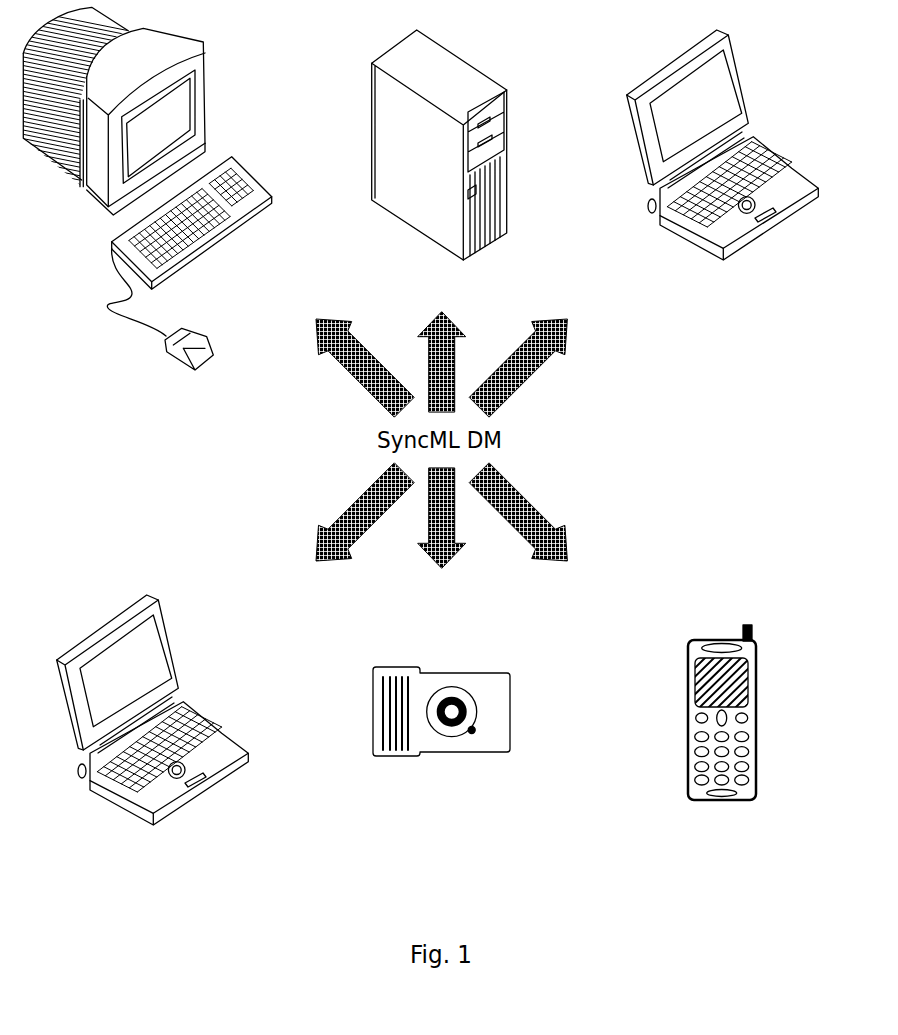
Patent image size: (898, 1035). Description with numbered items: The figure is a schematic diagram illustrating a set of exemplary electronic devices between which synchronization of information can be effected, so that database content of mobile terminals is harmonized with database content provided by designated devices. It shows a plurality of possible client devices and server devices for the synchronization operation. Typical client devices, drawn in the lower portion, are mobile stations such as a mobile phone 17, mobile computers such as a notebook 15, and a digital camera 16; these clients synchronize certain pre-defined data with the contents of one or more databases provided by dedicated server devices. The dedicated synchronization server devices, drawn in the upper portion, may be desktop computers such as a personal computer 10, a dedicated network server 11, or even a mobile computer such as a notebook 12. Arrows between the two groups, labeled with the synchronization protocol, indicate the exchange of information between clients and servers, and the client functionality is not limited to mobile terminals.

The personal computer 10 is at (211, 32).
The dedicated network server 11 is at (455, 29).
The notebook 12 is at (749, 29).
The notebook 15 is at (253, 780).
The digital camera 16 is at (492, 769).
The mobile phone 17 is at (770, 781).